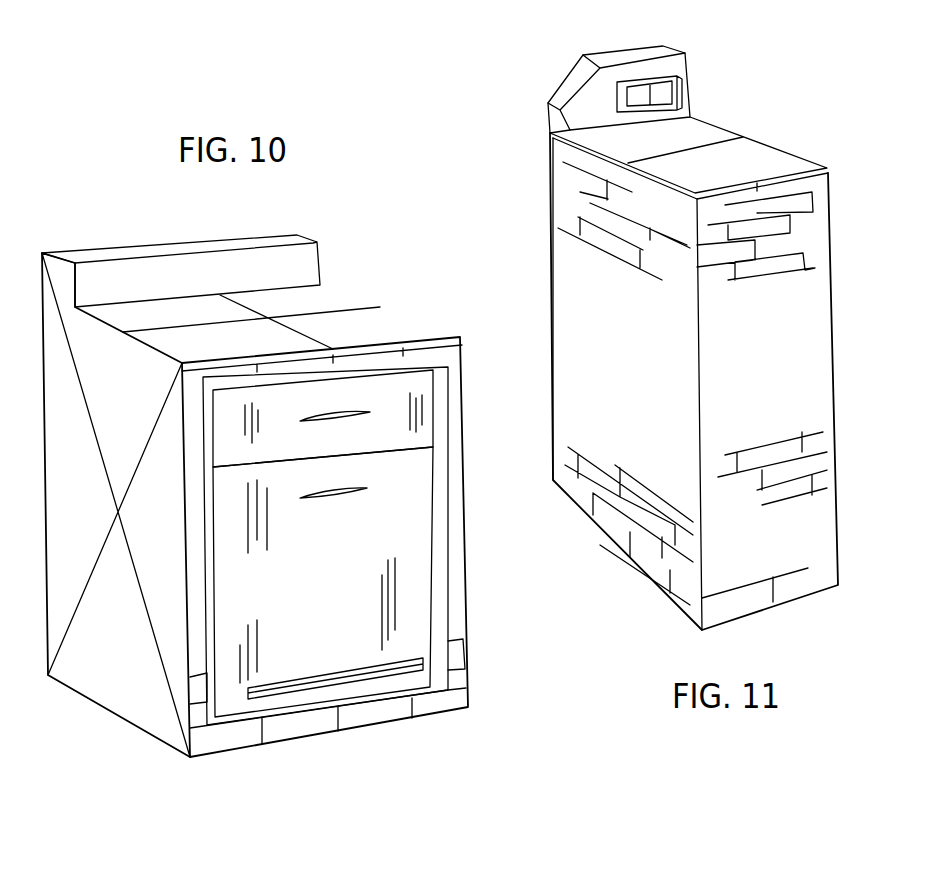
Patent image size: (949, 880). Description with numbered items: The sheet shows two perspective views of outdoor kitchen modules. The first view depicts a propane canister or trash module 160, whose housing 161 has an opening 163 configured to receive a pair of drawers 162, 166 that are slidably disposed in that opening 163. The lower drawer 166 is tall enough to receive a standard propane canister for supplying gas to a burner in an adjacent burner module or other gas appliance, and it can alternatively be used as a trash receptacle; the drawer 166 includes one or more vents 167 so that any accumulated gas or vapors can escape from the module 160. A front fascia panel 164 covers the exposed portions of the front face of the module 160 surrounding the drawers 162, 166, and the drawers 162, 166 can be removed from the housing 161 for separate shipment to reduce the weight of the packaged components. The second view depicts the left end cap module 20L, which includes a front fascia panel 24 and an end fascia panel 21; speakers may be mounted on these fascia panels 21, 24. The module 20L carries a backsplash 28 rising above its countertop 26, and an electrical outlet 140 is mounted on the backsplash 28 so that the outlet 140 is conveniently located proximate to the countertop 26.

In FIG. 10, the propane canister or trash module 160 is at (372, 290).
In FIG. 10, the housing 161 is at (42, 280).
In FIG. 10, the drawer 162 is at (400, 413).
In FIG. 10, the opening 163 is at (448, 605).
In FIG. 10, the front fascia panel 164 is at (462, 655).
In FIG. 10, the lower drawer 166 is at (423, 555).
In FIG. 10, the vent 167 is at (360, 678).
In FIG. 11, the left end cap module 20L is at (542, 91).
In FIG. 11, the end fascia panel 21 is at (550, 163).
In FIG. 11, the front fascia panel 24 is at (780, 348).
In FIG. 11, the countertop 26 is at (763, 153).
In FIG. 11, the backsplash 28 is at (683, 53).
In FIG. 11, the electrical outlet 140 is at (677, 93).